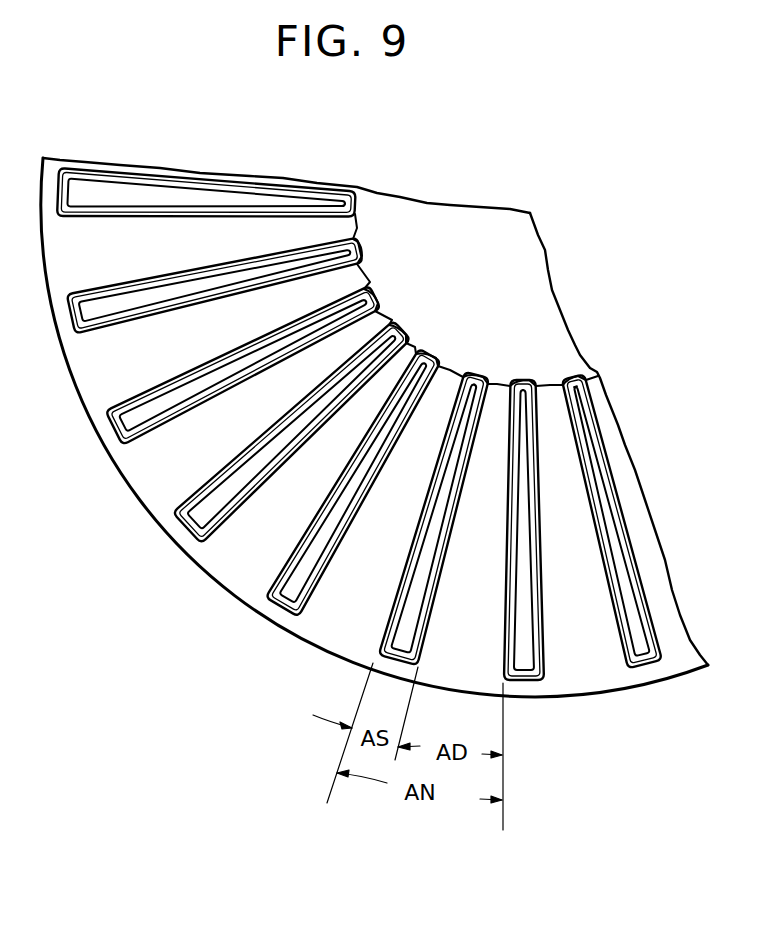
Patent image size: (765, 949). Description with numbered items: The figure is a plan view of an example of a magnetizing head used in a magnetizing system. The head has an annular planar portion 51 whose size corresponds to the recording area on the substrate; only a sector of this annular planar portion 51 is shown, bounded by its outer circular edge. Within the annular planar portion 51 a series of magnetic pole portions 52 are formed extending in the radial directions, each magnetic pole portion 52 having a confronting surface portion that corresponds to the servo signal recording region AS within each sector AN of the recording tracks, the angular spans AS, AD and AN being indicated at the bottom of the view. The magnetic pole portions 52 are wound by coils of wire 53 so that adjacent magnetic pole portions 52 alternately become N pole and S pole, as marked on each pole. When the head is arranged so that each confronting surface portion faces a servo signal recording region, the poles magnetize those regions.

The annular planar portion 51 is at (587, 675).
The magnetic pole portions 52 is at (400, 628).
The coils of wire 53 is at (492, 377).